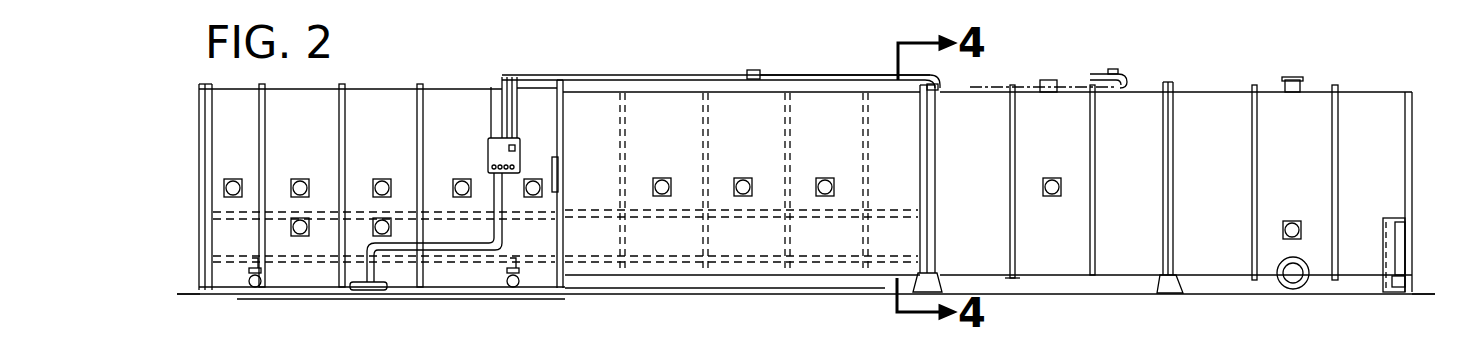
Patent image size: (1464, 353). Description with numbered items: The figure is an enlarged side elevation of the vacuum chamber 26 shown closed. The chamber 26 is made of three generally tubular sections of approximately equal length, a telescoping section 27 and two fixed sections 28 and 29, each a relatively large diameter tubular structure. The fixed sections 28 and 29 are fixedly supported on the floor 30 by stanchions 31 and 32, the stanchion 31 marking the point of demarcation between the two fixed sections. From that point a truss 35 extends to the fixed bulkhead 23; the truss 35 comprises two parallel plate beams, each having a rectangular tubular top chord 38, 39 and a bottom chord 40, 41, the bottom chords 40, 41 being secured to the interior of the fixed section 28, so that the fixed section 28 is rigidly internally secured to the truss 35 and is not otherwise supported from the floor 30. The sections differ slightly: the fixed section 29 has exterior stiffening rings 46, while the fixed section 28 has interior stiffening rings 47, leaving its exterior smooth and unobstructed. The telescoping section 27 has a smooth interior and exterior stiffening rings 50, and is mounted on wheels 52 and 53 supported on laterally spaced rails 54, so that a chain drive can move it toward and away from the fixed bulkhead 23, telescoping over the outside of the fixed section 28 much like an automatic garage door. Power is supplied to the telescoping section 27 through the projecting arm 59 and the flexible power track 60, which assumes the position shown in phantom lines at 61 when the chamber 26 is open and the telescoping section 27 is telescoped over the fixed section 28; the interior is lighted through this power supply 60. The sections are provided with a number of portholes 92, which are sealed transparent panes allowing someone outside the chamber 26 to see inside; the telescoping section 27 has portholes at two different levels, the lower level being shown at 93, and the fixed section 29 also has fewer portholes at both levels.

The fixed bulkhead 23 is at (200, 160).
The treatment apparatus 26 is at (855, 53).
The telescoping section 27 is at (353, 164).
The fixed section 28 is at (786, 154).
The fixed section 29 is at (1212, 89).
The floor 30 is at (1425, 290).
The stanchion 31 is at (940, 283).
The stanchion 32 is at (1178, 285).
The truss 35 is at (588, 208).
The rectangular tubular top chord 38 is at (888, 207).
The rectangular tubular top chord 39 is at (888, 207).
The bottom chord 40 is at (893, 253).
The bottom chord 41 is at (945, 232).
The exterior stiffening rings 46 is at (1337, 115).
The interior stiffening rings 47 is at (705, 155).
The exterior stiffening rings 50 is at (425, 118).
The wheel 52 is at (250, 290).
The wheel 53 is at (518, 288).
The rails 54 is at (462, 296).
The projecting arm 59 is at (615, 75).
The flexible power track 60 is at (838, 70).
The phantom position of flexible power track 61 is at (1130, 76).
The portholes 92 is at (380, 178).
The lower level portholes 93 is at (293, 226).